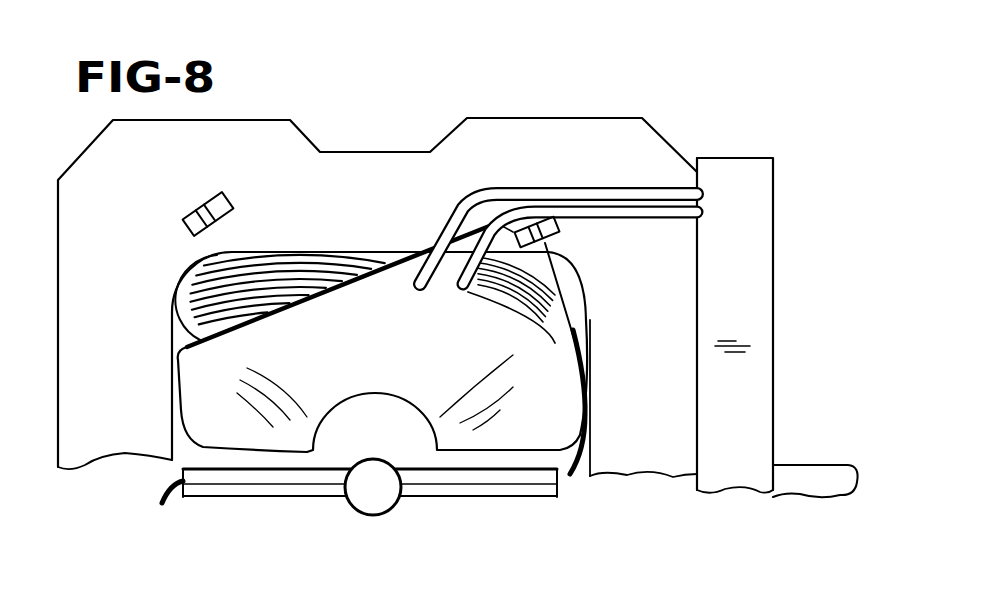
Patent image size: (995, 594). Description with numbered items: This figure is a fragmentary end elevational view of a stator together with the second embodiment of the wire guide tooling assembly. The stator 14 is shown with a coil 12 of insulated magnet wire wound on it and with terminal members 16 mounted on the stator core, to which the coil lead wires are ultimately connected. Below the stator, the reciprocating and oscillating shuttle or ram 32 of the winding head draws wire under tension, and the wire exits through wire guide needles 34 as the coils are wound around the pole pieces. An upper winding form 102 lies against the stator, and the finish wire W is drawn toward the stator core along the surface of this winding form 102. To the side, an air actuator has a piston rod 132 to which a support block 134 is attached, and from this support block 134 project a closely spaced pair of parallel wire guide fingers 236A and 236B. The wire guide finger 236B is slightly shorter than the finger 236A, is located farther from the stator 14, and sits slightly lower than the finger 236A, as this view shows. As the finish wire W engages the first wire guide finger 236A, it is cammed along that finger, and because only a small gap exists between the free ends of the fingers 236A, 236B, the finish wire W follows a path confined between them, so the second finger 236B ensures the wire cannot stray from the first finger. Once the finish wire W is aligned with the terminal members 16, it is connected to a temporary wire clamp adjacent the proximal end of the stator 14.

The stator 14 is at (293, 122).
The stator terminal member 16 is at (198, 212).
The coil 12 is at (287, 254).
The first wire guide finger 236A is at (450, 224).
The second wire guide finger 236B is at (468, 292).
The support block 134 is at (757, 248).
The piston rod 132 is at (817, 470).
The upper winding form 102 is at (350, 386).
The shuttle or ram 32 is at (373, 517).
The wire guide needle 34 is at (270, 497).
The finish wire W is at (318, 284).